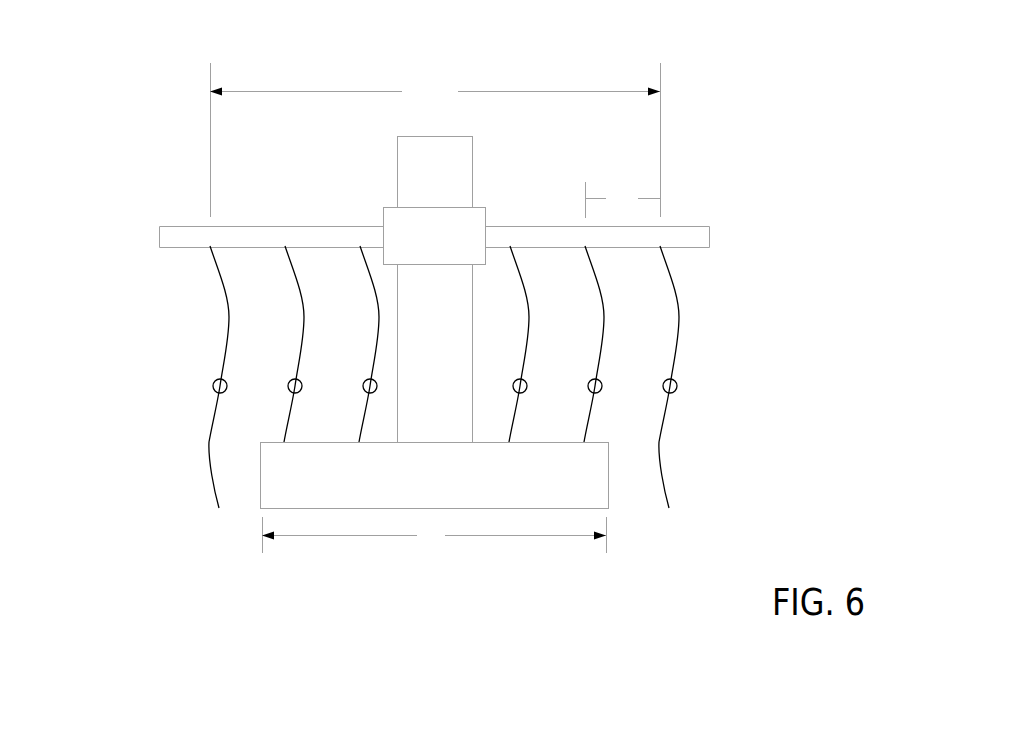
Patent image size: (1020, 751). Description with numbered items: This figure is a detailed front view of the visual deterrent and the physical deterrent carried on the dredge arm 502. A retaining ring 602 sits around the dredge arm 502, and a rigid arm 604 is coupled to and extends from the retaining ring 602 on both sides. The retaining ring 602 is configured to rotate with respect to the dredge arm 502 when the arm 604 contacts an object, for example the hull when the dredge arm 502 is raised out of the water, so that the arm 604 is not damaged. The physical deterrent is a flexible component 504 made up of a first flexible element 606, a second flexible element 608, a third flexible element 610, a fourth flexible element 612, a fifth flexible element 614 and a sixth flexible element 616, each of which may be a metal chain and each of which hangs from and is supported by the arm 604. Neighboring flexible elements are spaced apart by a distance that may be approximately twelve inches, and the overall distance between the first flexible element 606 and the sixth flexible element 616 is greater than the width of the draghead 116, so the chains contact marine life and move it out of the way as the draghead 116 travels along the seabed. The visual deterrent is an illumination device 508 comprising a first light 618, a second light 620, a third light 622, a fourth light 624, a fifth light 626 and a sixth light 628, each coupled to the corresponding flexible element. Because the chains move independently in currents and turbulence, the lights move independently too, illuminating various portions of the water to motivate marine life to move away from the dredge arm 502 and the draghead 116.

The dredge arm 502 is at (104, 114).
The flexible component 504 is at (204, 279).
The illumination device 508 is at (688, 382).
The retaining ring 602 is at (477, 216).
The arm 604 is at (172, 237).
The draghead 116 is at (450, 487).
The first flexible element 606 is at (229, 319).
The second flexible element 608 is at (304, 319).
The third flexible element 610 is at (379, 319).
The fourth flexible element 612 is at (529, 319).
The fifth flexible element 614 is at (604, 319).
The sixth flexible element 616 is at (679, 319).
The first light 618 is at (213, 386).
The second light 620 is at (288, 386).
The third light 622 is at (363, 386).
The fourth light 624 is at (513, 386).
The fifth light 626 is at (588, 386).
The sixth light 628 is at (663, 386).